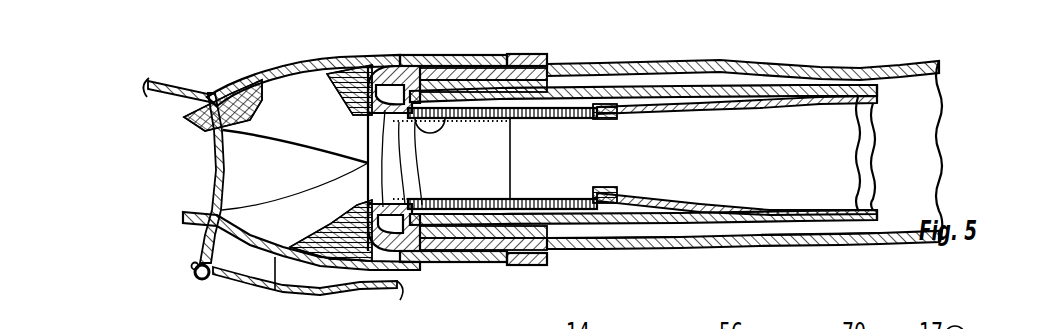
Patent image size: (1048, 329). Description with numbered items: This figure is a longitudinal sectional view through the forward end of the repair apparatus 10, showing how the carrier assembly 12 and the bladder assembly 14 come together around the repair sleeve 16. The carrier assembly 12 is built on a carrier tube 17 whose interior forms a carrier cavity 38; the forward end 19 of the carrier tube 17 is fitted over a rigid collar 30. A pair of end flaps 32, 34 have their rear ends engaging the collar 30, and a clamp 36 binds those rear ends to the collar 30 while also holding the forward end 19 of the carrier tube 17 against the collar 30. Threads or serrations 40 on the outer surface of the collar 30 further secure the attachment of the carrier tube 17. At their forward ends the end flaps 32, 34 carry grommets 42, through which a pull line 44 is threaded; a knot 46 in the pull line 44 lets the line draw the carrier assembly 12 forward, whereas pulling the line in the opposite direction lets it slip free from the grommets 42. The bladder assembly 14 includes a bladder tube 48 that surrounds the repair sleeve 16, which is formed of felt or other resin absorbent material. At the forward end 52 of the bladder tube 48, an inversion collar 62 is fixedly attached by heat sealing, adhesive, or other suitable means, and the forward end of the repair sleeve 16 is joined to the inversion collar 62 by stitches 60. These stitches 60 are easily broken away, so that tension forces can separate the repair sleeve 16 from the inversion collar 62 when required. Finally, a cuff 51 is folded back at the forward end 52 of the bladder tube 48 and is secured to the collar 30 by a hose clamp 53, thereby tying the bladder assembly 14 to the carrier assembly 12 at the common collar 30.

The repair apparatus 10 is at (487, 43).
The carrier assembly 12 is at (490, 60).
The bladder assembly 14 is at (757, 104).
The repair sleeve 16 is at (753, 95).
The carrier tube 17 is at (823, 67).
The forward end 19 is at (493, 55).
The rigid collar 30 is at (404, 90).
The end flap 32 is at (253, 72).
The end flap 34 is at (275, 291).
The clamp 36 is at (413, 253).
The carrier cavity 38 is at (606, 190).
The threads or serrations 40 is at (542, 265).
The grommets 42 is at (210, 97).
The pull line 44 is at (293, 287).
The knot 46 is at (200, 270).
The bladder tube 48 is at (803, 229).
The cuff 51 is at (484, 230).
The forward end 52 is at (410, 240).
The hose clamp 53 is at (433, 202).
The stitches 60 is at (691, 235).
The inversion collar 62 is at (465, 57).